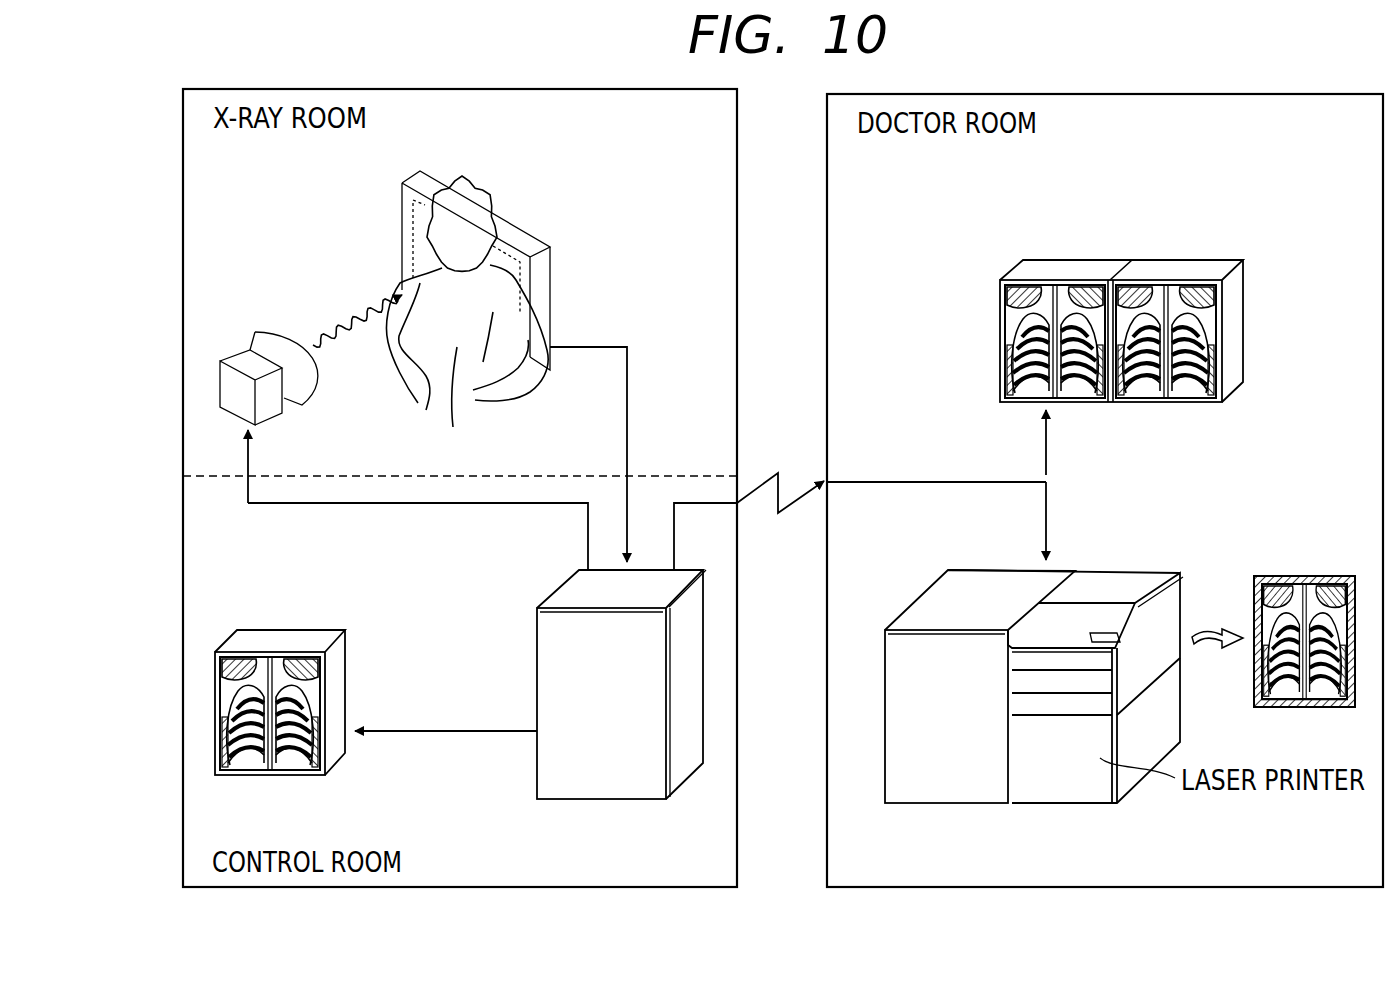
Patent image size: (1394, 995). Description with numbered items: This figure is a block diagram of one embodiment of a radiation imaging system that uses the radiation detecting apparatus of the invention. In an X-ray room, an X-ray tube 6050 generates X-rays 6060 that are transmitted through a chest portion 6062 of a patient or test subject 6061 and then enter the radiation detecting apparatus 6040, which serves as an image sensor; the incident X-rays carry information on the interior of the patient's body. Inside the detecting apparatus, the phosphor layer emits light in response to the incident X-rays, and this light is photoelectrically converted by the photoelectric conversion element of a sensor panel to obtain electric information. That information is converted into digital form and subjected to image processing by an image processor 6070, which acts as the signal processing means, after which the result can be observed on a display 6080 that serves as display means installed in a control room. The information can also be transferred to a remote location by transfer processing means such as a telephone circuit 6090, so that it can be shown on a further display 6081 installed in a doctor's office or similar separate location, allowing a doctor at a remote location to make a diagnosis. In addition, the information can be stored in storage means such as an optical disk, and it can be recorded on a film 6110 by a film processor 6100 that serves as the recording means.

The radiation detecting apparatus 6040 is at (520, 273).
The X-ray tube 6050 is at (242, 355).
The X-rays 6060 is at (313, 340).
The patient or test subject 6061 is at (487, 182).
The chest portion 6062 is at (457, 352).
The image processor 6070 is at (570, 788).
The display 6080 is at (285, 637).
The display 6081 is at (1045, 267).
The telephone circuit 6090 is at (775, 475).
The film processor 6100 is at (942, 790).
The film 6110 is at (1278, 575).